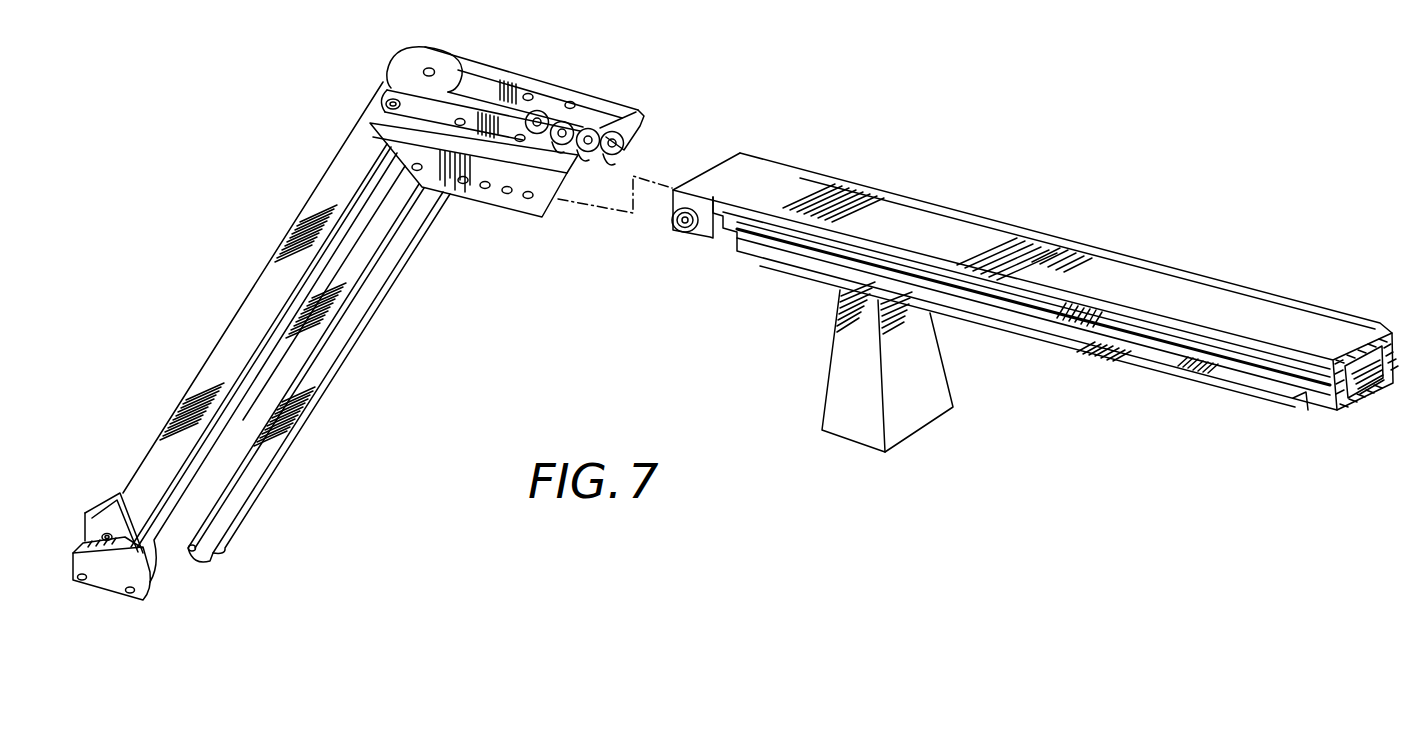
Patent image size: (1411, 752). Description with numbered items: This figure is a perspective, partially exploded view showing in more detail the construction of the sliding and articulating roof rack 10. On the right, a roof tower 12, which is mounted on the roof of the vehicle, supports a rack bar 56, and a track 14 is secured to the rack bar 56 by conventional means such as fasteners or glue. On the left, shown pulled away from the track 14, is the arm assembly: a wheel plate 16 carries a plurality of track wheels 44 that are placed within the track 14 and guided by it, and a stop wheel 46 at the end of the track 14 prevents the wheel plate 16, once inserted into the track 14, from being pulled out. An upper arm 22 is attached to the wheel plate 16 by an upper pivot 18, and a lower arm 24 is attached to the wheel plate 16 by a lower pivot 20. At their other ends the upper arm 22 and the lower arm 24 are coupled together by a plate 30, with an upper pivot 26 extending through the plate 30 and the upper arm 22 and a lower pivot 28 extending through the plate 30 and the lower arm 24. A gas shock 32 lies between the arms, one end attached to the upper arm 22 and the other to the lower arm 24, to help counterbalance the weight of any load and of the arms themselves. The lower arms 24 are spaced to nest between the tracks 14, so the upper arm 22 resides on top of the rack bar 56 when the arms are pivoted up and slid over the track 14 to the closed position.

The sliding and articulating roof rack 10 is at (792, 120).
The roof tower 12 is at (935, 390).
The track 14 is at (1143, 262).
The wheel plate 16 is at (488, 200).
The upper pivot 18 is at (386, 104).
The lower pivot 20 is at (419, 170).
The upper arm 22 is at (228, 354).
The lower arm 24 is at (273, 380).
The upper pivot 26 is at (106, 534).
The lower pivot 28 is at (130, 591).
The plate 30 is at (103, 588).
The gas shock 32 is at (355, 213).
The track wheels 44 is at (558, 210).
The stop wheel 46 is at (688, 233).
The rack bar 56 is at (1358, 398).